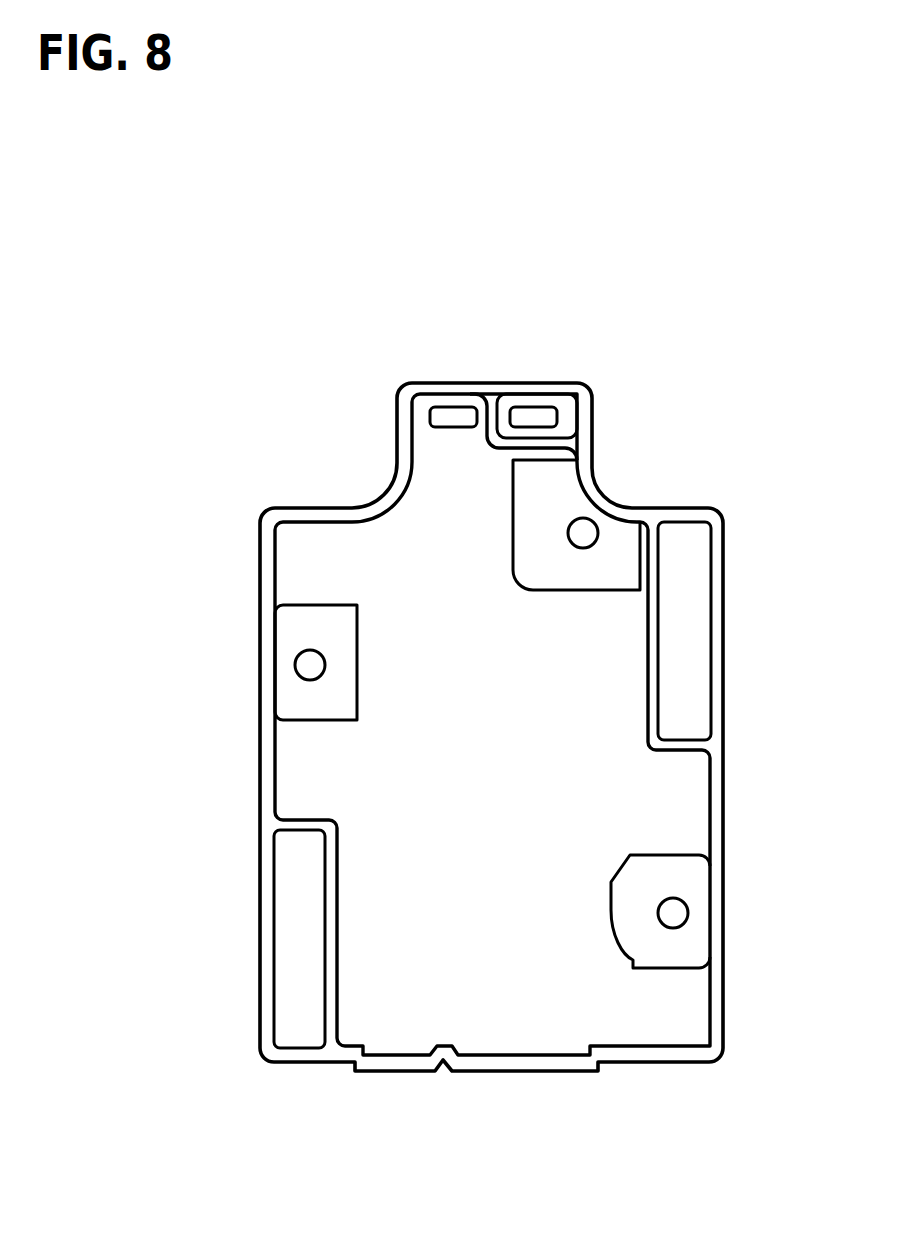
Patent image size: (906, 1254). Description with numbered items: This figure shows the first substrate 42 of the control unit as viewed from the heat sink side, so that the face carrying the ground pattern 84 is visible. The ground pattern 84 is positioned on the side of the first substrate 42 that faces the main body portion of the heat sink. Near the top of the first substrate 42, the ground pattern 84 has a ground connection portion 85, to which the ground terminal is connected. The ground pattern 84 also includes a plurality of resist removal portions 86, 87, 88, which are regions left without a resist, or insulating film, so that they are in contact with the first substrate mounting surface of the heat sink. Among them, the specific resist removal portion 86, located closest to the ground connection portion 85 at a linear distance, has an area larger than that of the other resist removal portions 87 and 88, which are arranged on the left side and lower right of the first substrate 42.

The first substrate 42 is at (337, 507).
The ground pattern 84 is at (308, 563).
The ground connection portion 85 is at (452, 405).
The specific resist removal portion 86 is at (562, 500).
The resist removal portion 87 is at (290, 630).
The resist removal portion 88 is at (690, 941).